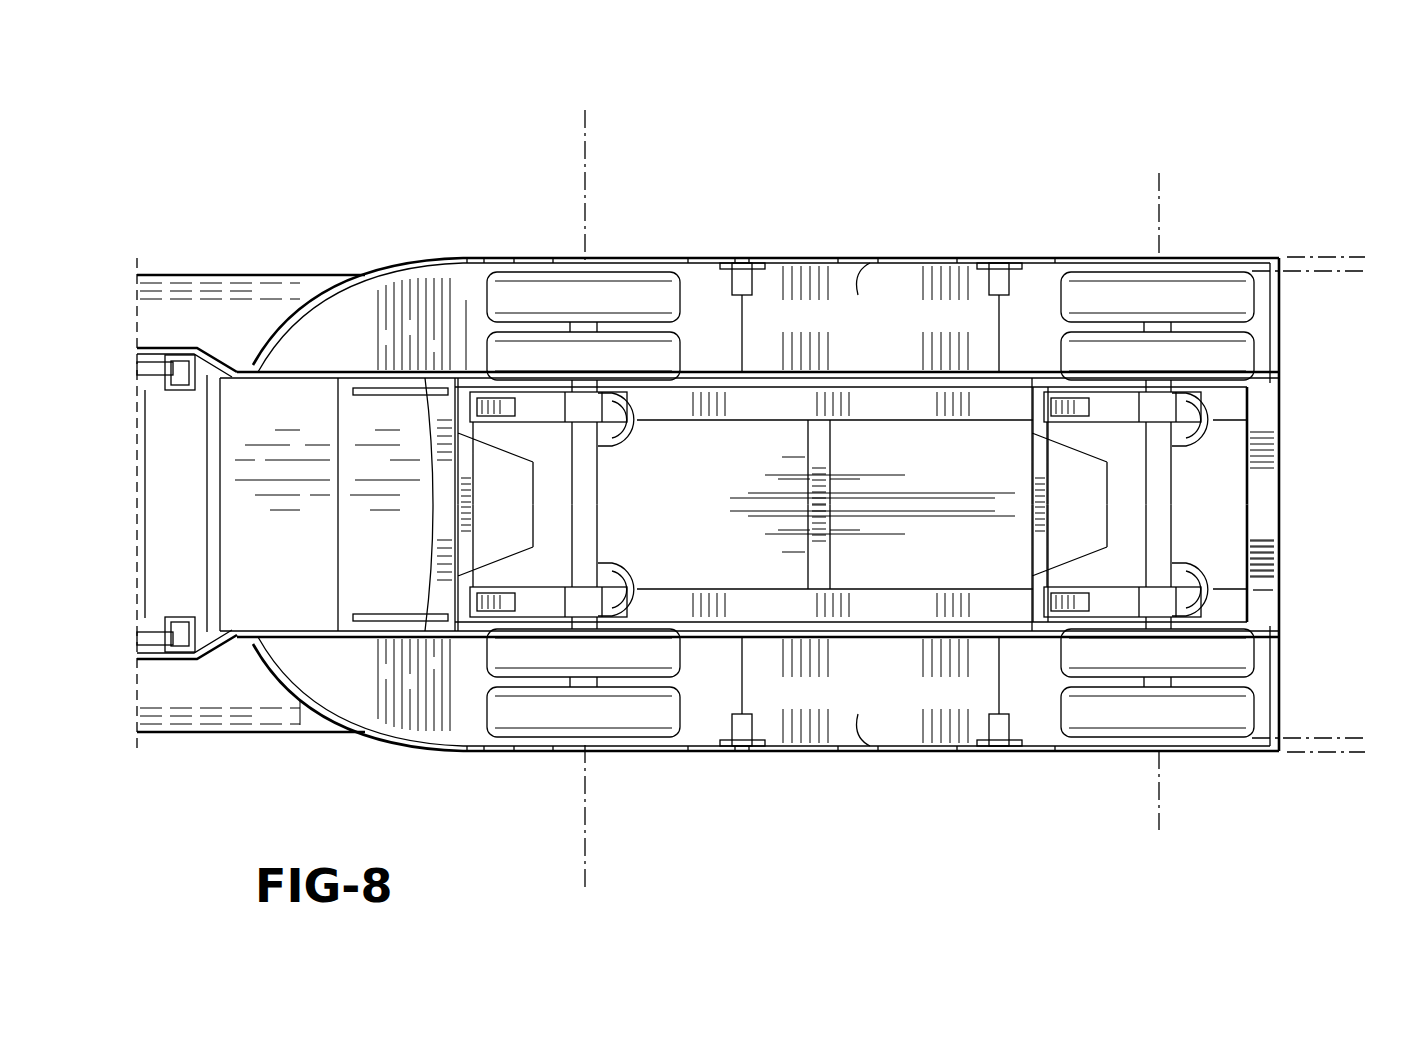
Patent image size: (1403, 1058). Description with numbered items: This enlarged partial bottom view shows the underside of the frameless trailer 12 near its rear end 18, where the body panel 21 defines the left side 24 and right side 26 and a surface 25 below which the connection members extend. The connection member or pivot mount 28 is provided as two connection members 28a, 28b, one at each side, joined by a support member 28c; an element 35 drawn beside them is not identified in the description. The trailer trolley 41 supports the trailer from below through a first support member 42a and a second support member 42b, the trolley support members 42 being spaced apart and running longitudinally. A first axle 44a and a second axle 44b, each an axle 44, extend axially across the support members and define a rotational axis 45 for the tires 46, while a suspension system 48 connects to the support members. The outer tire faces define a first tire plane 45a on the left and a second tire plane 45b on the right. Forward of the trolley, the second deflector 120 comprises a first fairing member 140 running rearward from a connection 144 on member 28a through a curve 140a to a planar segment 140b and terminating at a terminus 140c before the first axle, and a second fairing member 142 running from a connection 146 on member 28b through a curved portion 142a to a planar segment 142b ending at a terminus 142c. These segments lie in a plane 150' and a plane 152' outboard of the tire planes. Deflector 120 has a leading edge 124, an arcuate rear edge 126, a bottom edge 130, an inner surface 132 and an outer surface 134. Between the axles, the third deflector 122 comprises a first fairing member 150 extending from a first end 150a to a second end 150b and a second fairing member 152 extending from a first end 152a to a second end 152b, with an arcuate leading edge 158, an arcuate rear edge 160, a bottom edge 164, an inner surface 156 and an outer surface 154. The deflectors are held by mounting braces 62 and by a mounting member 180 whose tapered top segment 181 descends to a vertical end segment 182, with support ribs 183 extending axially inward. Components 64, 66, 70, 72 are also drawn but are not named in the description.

The frameless trailer 12 is at (185, 790).
The rear end 18 is at (1340, 508).
The body panel 21 is at (173, 306).
The left side 24 is at (203, 752).
The surface 25 is at (167, 705).
The right side 26 is at (178, 200).
The connection member 28 is at (200, 331).
The connection member 28a is at (243, 650).
The connection member 28b is at (233, 350).
The support member 28c is at (190, 570).
The hinge 35 is at (178, 376).
The trailer trolley 41 is at (1313, 489).
The trolley support member 42 is at (823, 452).
The trolley first support member 42a is at (1242, 603).
The trolley second support member 42b is at (1242, 402).
The axle 44 is at (921, 504).
The first axle 44a is at (602, 478).
The second axle 44b is at (1177, 485).
The rotational axis 45 is at (585, 118).
The first tire plane 45a is at (1351, 737).
The second tire plane 45b is at (1351, 273).
The tire 46 is at (613, 288).
The suspension system 48 is at (613, 577).
The mounting brace 62 is at (733, 256).
The mounting bracket 64 is at (762, 258).
The actuator rod 66 is at (730, 283).
The lift mechanism 70 is at (758, 501).
The lift mechanism 72 is at (747, 258).
The second deflector 120 is at (358, 275).
The third deflector 122 is at (708, 492).
The leading edge 124 is at (229, 262).
The rear edge 126 is at (467, 258).
The bottom edge 130 is at (342, 293).
The inner surface 132 is at (437, 741).
The outer surface 134 is at (402, 752).
The first fairing member 140 is at (361, 745).
The curve 140a is at (297, 690).
The planar segment 140b is at (484, 751).
The terminus 140c is at (514, 751).
The second fairing member 142 is at (361, 265).
The curved portion 142a is at (247, 356).
The planar segment 142b is at (484, 258).
The terminus 142c is at (514, 258).
The connection 144 is at (252, 648).
The connection 146 is at (253, 362).
The first fairing member 150 is at (871, 807).
The plane 150' is at (1312, 771).
The first end 150a is at (654, 751).
The second end 150b is at (1090, 751).
The second fairing member 152 is at (871, 200).
The plane 152' is at (1315, 230).
The first end 152a is at (654, 258).
The second end 152b is at (1090, 258).
The outer surface 154 is at (838, 258).
The inner surface 156 is at (868, 504).
The leading edge 158 is at (688, 258).
The rear edge 160 is at (1055, 258).
The bottom edge 164 is at (957, 258).
The mounting member 180 is at (444, 306).
The tapered top segment 181 is at (878, 258).
The vertical end segment 182 is at (553, 258).
The support rib 183 is at (745, 336).